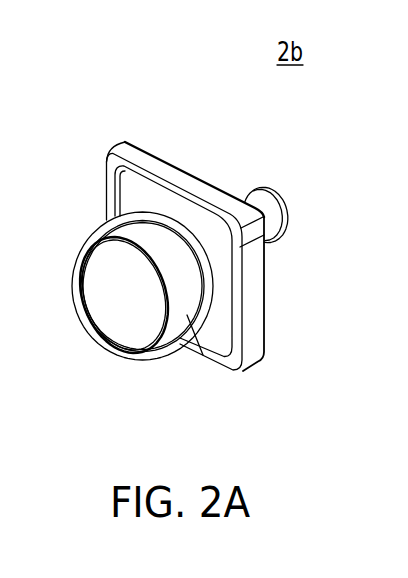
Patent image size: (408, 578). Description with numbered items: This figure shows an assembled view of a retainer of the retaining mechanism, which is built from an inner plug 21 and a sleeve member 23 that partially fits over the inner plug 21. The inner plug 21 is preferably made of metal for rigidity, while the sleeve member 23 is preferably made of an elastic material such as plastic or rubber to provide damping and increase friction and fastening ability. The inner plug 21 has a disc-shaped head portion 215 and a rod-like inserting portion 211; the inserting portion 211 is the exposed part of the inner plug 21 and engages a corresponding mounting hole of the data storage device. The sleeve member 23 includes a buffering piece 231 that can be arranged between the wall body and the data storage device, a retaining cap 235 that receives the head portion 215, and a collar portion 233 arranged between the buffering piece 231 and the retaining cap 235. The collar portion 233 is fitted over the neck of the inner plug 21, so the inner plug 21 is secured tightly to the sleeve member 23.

The inner plug 21 is at (104, 286).
The inserting portion 211 is at (265, 189).
The head portion 215 is at (124, 315).
The sleeve member 23 is at (188, 229).
The buffering piece 231 is at (253, 342).
The collar portion 233 is at (196, 250).
The retaining cap 235 is at (203, 301).